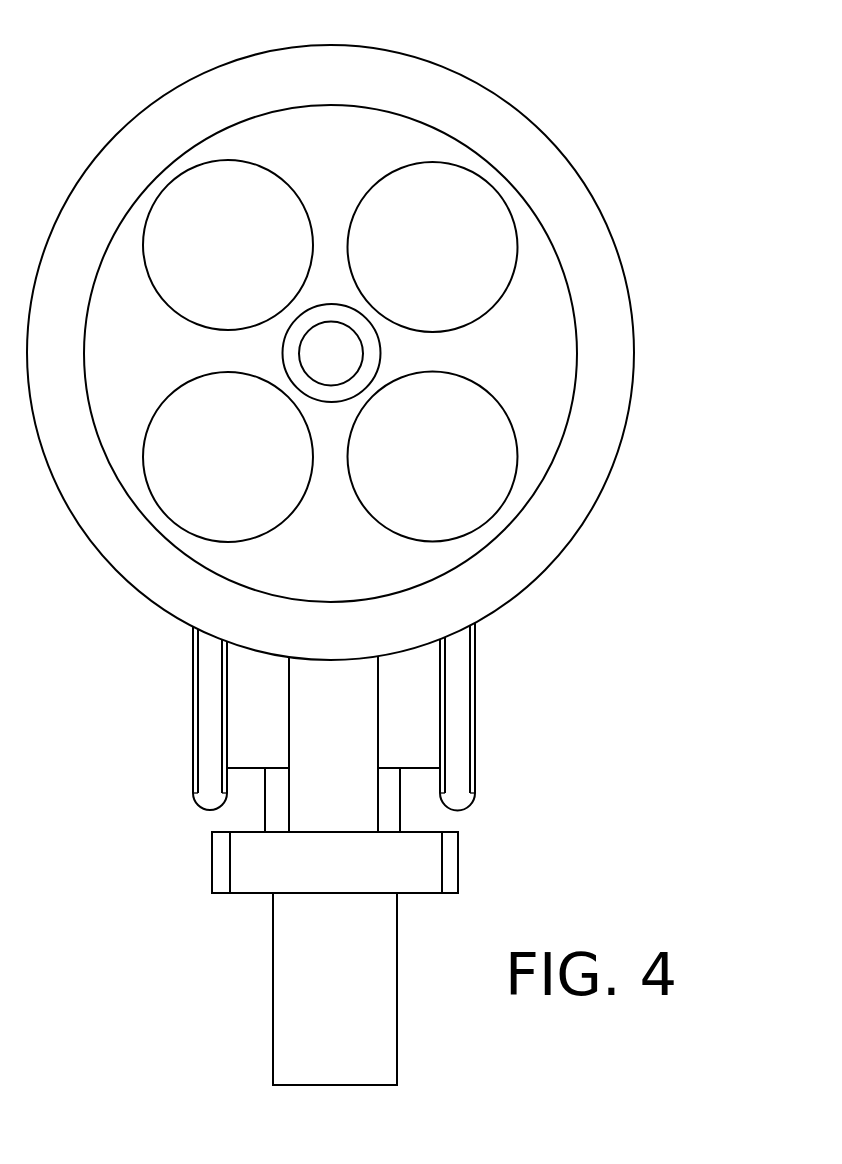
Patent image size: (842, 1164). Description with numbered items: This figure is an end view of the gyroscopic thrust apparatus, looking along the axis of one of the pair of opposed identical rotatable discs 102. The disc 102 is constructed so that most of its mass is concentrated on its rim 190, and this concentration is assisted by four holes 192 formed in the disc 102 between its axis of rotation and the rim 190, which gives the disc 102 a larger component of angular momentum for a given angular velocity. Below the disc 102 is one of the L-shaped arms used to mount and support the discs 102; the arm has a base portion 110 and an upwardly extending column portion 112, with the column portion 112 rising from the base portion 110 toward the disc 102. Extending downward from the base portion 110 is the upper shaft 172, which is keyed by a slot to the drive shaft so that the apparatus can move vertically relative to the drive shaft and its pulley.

The rim 190 is at (490, 102).
The rotatable disc 102 is at (532, 555).
The hole 192 is at (222, 243).
The column portion 112 is at (340, 799).
The base portion 110 is at (345, 877).
The shaft 172 is at (352, 985).